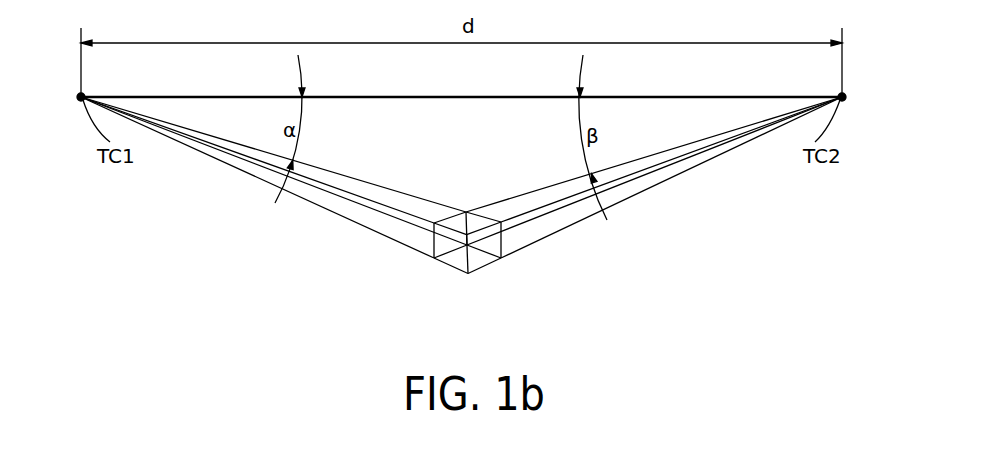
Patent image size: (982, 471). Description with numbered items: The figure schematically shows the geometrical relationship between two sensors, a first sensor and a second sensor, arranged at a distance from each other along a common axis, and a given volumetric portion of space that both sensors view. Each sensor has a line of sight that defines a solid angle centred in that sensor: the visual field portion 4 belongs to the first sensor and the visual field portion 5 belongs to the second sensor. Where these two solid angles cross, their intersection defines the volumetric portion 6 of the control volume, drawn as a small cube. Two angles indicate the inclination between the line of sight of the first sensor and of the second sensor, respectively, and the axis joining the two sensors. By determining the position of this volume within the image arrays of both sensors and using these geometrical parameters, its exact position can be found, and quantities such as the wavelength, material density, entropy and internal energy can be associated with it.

The visual field portion 4 is at (233, 167).
The visual field portion 5 is at (695, 166).
The volumetric portion 6 is at (503, 259).